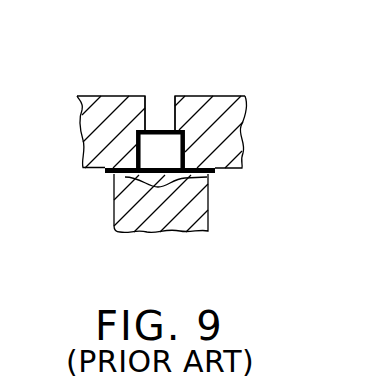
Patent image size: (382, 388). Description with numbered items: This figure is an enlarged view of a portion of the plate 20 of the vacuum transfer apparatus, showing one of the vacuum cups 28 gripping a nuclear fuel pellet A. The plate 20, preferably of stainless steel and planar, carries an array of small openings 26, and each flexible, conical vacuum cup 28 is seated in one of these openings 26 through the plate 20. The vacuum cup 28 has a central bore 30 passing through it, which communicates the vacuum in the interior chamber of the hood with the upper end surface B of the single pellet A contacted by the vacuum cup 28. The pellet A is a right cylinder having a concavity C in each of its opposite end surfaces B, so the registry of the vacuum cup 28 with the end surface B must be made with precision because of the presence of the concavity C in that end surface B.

The plate 20 is at (220, 96).
The opening 26 is at (148, 127).
The vacuum cup 28 is at (209, 181).
The central bore 30 is at (148, 174).
The nuclear fuel pellet A is at (209, 217).
The end surface B is at (120, 168).
The concavity C is at (180, 174).